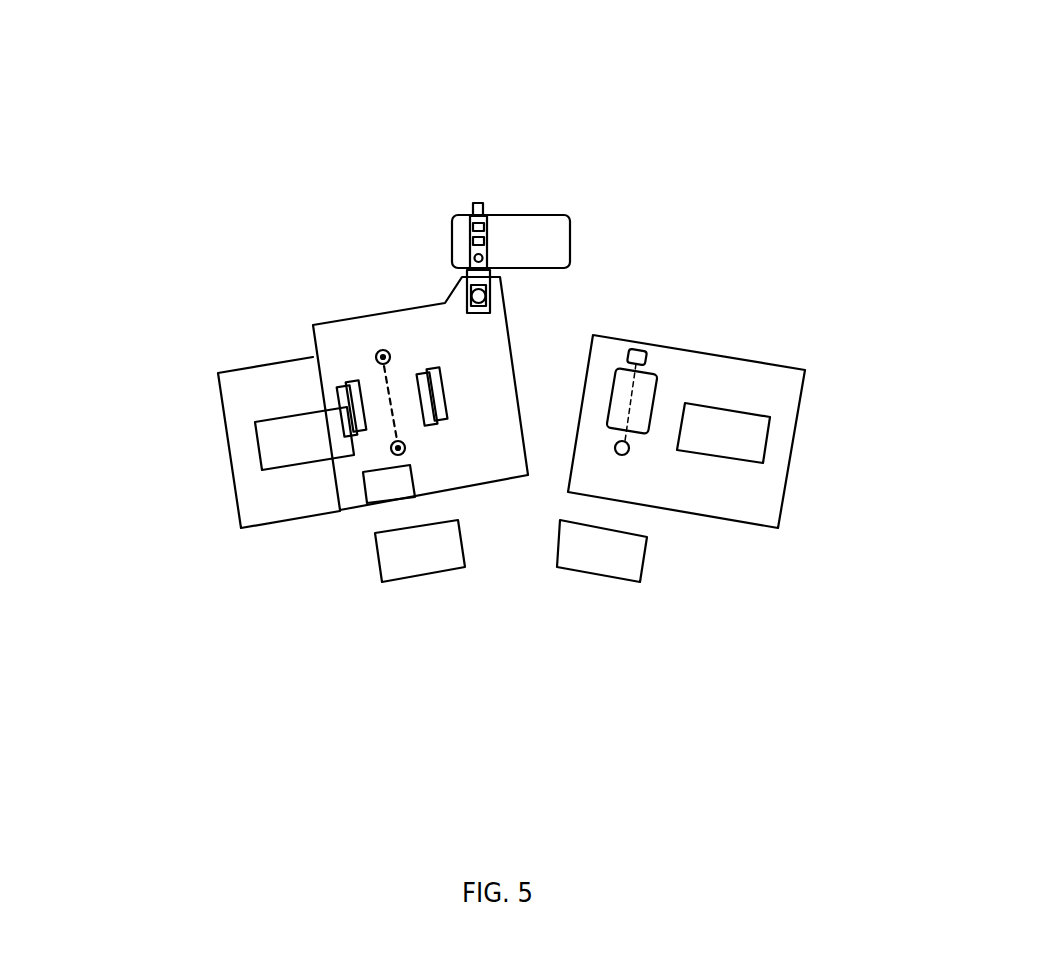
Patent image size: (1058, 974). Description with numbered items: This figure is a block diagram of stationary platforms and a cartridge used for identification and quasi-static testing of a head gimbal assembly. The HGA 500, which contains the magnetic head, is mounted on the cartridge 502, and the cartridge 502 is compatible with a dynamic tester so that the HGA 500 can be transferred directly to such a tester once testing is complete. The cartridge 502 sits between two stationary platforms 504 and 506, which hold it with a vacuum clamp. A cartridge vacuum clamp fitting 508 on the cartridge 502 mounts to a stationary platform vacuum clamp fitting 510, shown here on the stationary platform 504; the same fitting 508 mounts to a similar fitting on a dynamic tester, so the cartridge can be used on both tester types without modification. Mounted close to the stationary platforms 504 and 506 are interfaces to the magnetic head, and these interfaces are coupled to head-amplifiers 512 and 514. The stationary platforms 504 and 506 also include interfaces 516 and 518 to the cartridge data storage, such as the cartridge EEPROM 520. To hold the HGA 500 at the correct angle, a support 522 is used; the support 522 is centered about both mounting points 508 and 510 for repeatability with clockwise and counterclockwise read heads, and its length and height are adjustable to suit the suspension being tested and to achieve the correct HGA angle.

The HGA 500 is at (476, 205).
The cartridge 502 is at (375, 308).
The stationary platform 504 is at (762, 377).
The stationary platform 506 is at (260, 395).
The cartridge vacuum clamp fitting 508 is at (395, 402).
The stationary platform vacuum clamp fitting 510 is at (632, 397).
The head-amplifier 512 is at (255, 447).
The head-amplifier 514 is at (770, 443).
The interface to cartridge data storage 516 is at (422, 575).
The interface to cartridge data storage 518 is at (599, 577).
The cartridge EEPROM 520 is at (382, 488).
The support 522 is at (572, 233).